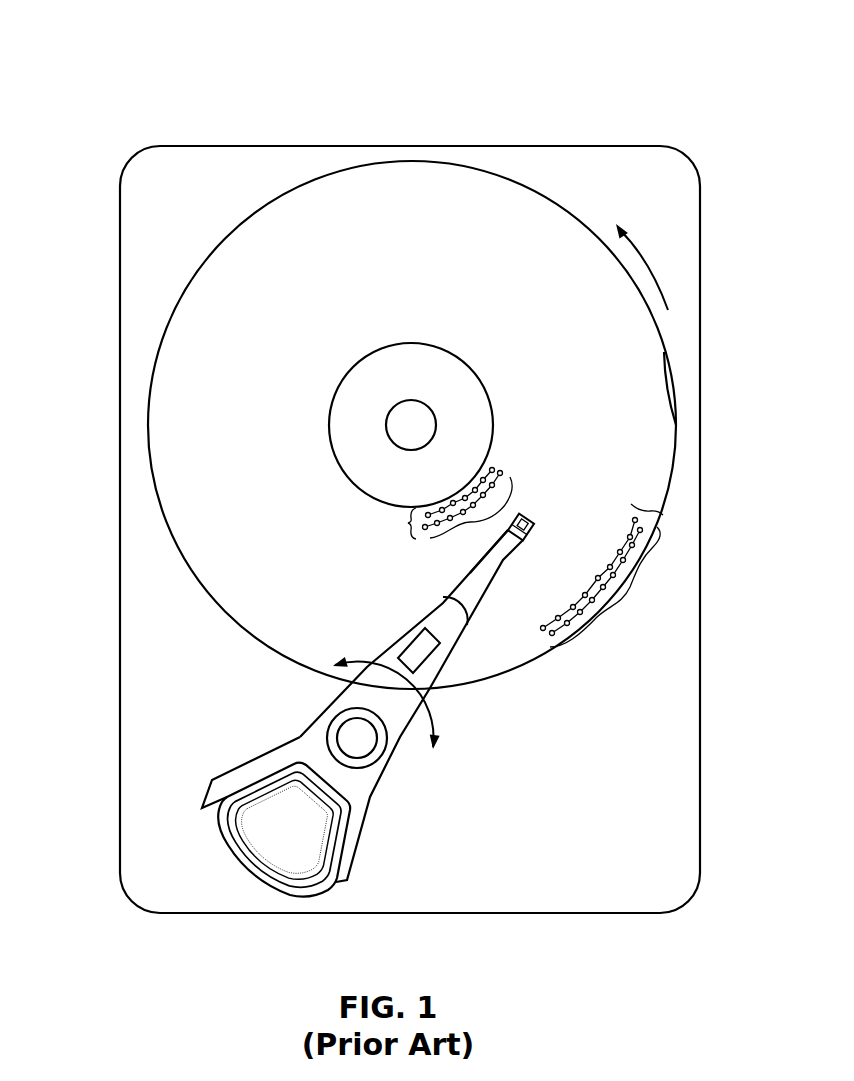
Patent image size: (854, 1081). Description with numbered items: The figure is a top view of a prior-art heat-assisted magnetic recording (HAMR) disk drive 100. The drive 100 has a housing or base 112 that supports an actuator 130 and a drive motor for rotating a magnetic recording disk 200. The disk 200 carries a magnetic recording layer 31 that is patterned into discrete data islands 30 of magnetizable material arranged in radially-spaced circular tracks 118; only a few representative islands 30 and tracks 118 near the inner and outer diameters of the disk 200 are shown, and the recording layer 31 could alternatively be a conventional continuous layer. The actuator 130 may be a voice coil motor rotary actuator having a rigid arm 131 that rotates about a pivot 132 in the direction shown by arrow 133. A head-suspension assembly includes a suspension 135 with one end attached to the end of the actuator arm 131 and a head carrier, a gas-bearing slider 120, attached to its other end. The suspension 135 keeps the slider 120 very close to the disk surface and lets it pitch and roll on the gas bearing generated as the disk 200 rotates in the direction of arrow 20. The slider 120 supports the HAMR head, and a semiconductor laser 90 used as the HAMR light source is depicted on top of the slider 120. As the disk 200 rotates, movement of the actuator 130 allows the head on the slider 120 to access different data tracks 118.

The HAMR disk drive 100 is at (118, 63).
The housing or base 112 is at (631, 146).
The disk 200 is at (271, 200).
The magnetic recording layer 31 is at (652, 391).
The arrow 20 is at (645, 250).
The circular tracks 118 is at (410, 523).
The data islands 30 is at (500, 512).
The semiconductor laser 90 is at (533, 521).
The gas-bearing slider 120 is at (530, 540).
The suspension 135 is at (455, 597).
The rigid arm 131 is at (398, 645).
The arrow 133 is at (432, 720).
The pivot 132 is at (348, 733).
The actuator 130 is at (208, 796).